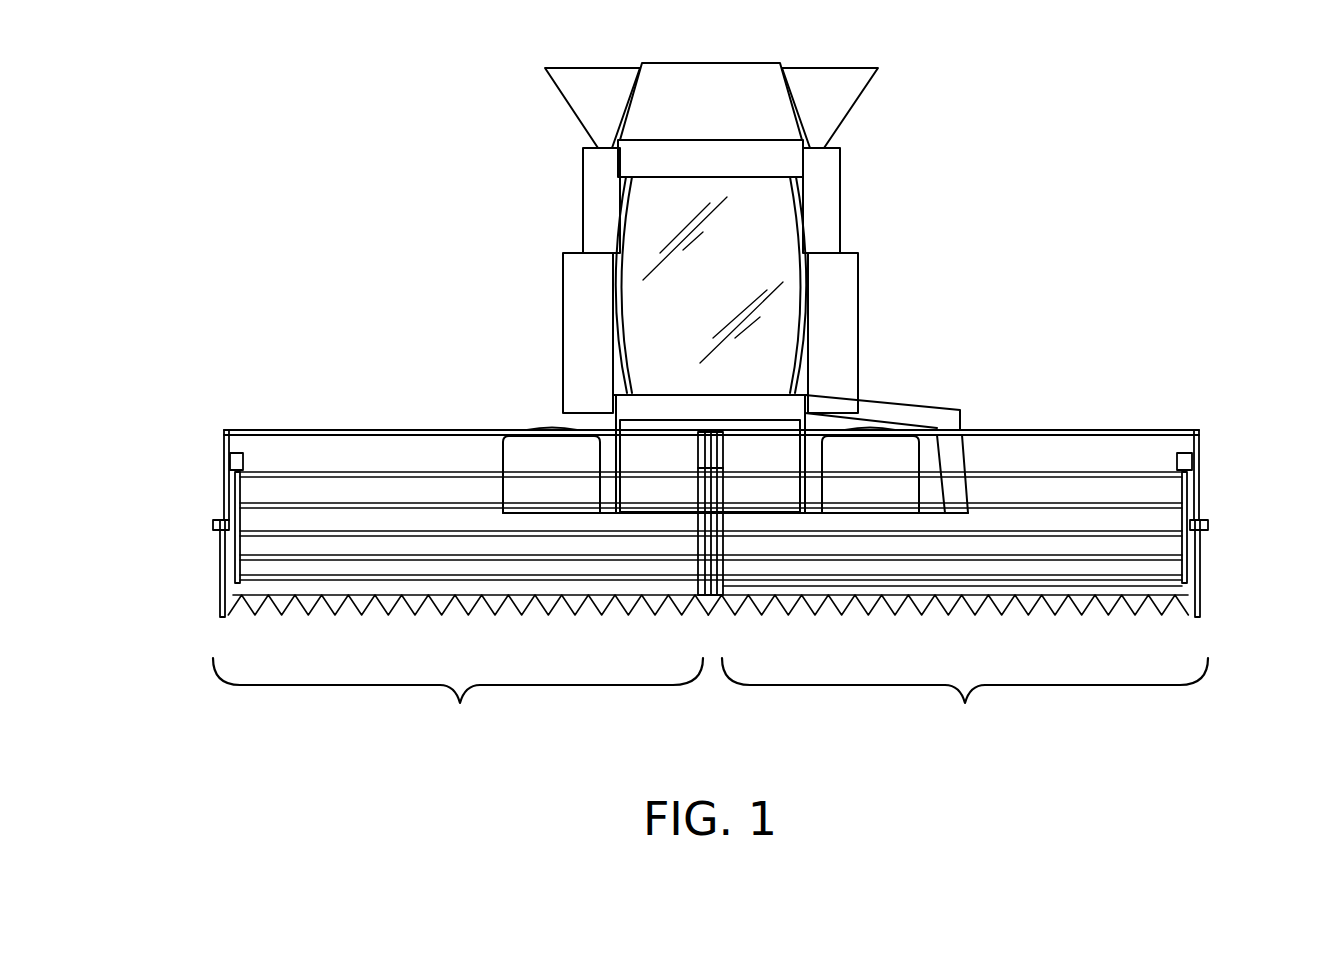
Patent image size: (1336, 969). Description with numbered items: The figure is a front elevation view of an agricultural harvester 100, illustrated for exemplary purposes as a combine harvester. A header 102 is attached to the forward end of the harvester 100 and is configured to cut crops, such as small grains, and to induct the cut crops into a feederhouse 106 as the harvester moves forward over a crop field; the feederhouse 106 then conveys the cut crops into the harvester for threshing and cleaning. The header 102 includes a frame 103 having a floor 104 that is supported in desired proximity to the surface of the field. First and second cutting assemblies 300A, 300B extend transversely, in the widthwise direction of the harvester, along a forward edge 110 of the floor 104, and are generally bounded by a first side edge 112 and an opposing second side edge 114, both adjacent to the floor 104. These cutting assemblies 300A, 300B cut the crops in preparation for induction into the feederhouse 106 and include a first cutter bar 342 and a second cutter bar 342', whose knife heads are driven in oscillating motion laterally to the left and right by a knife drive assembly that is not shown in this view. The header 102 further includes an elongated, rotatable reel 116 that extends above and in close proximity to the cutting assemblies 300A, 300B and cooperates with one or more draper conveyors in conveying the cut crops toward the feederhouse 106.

The agricultural harvester 100 is at (524, 218).
The header 102 is at (209, 423).
The frame 103 is at (321, 428).
The floor 104 is at (412, 598).
The feederhouse 106 is at (760, 437).
The forward edge 110 is at (400, 615).
The first side edge 112 is at (221, 588).
The second side edge 114 is at (1208, 588).
The rotatable reel 116 is at (1019, 530).
The first cutter bar 342 is at (468, 627).
The second cutter bar 342' is at (948, 627).
The first cutting assembly 300A is at (458, 701).
The second cutting assembly 300B is at (965, 701).